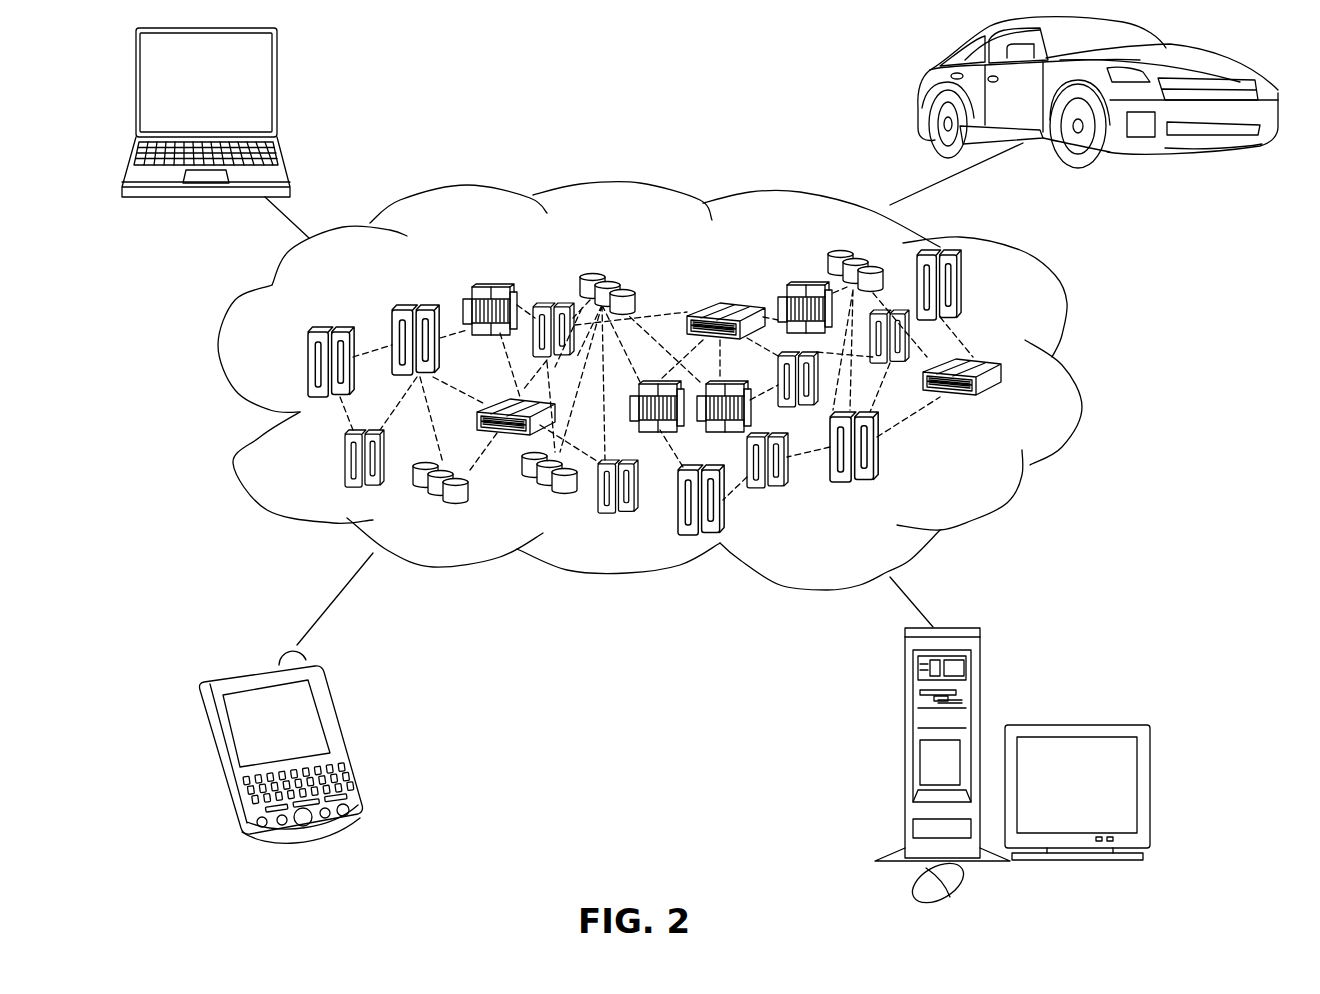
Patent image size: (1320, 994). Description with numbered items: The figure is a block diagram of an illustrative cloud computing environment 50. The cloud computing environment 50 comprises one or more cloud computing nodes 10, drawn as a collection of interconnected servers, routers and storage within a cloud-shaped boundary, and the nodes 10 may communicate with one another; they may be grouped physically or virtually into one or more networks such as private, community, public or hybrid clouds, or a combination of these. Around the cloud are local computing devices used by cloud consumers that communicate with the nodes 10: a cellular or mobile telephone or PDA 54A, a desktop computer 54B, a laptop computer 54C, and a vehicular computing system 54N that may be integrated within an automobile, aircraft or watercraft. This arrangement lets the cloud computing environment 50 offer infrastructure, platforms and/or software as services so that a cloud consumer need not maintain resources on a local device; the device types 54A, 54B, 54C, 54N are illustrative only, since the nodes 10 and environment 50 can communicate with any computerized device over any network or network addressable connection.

The cloud computing node 10 is at (700, 464).
The cloud computing environment 50 is at (1072, 374).
The cellular telephone or PDA 54A is at (332, 705).
The desktop computer 54B is at (902, 690).
The laptop computer 54C is at (279, 66).
The vehicular computing system 54N is at (924, 82).